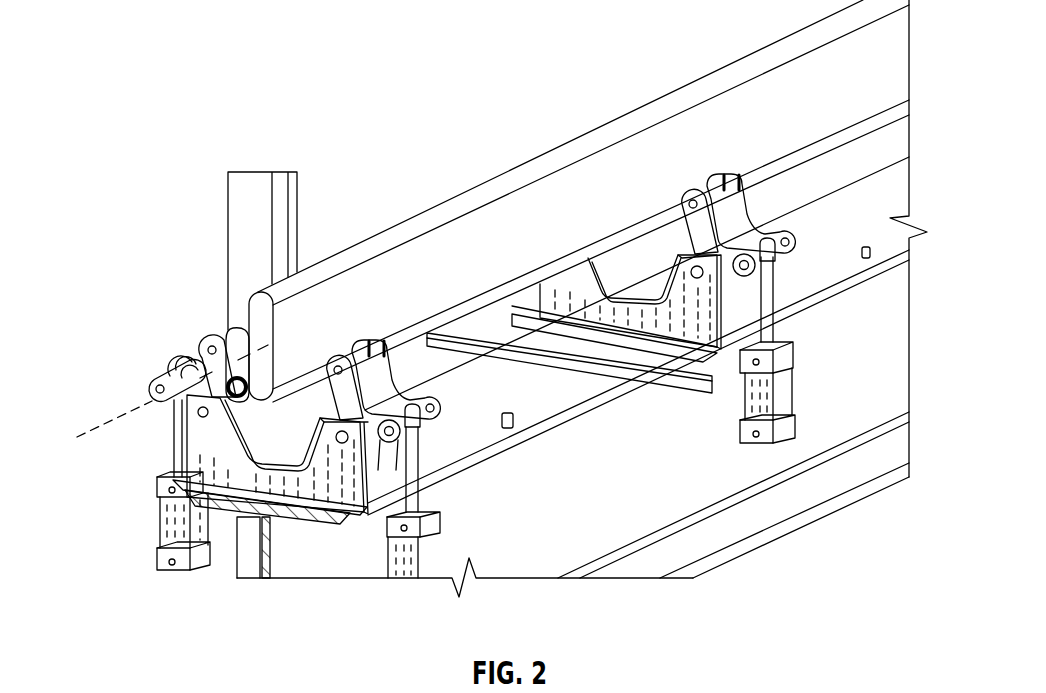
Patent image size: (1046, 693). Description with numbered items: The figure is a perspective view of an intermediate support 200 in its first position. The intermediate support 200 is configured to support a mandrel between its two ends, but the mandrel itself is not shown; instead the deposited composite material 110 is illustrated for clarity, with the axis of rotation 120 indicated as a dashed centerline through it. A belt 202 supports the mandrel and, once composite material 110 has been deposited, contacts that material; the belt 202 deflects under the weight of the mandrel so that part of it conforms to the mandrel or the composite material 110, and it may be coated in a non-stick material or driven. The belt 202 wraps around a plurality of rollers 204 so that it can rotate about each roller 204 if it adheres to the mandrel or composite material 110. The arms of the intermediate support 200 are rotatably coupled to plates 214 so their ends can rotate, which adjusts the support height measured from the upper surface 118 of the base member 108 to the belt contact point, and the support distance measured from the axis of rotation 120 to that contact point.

The base member 108 is at (664, 543).
The composite material 110 is at (463, 212).
The upper surface 118 is at (508, 372).
The axis of rotation 120 is at (110, 418).
The intermediate support 200 is at (230, 579).
The belt 202 is at (365, 350).
The rollers 204 is at (222, 333).
The plates 214 is at (223, 476).